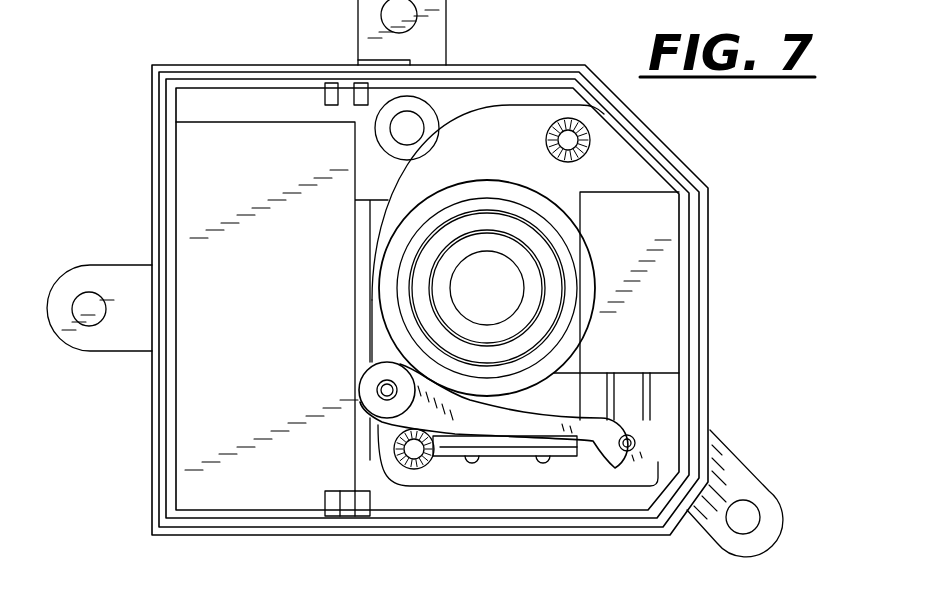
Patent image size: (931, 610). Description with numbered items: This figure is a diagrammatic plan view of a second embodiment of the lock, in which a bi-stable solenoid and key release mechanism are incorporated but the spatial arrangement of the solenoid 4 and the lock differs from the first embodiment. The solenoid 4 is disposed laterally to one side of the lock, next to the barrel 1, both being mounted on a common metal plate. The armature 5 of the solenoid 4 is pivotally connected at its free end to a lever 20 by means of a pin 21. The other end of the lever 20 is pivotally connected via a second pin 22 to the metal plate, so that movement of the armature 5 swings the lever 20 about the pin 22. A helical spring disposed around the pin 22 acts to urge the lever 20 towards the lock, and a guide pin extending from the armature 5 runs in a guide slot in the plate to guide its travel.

The barrel 1 is at (478, 271).
The solenoid 4 is at (660, 224).
The armature 5 is at (640, 393).
The lever 20 is at (593, 441).
The pin 21 is at (637, 442).
The pin 22 is at (378, 391).